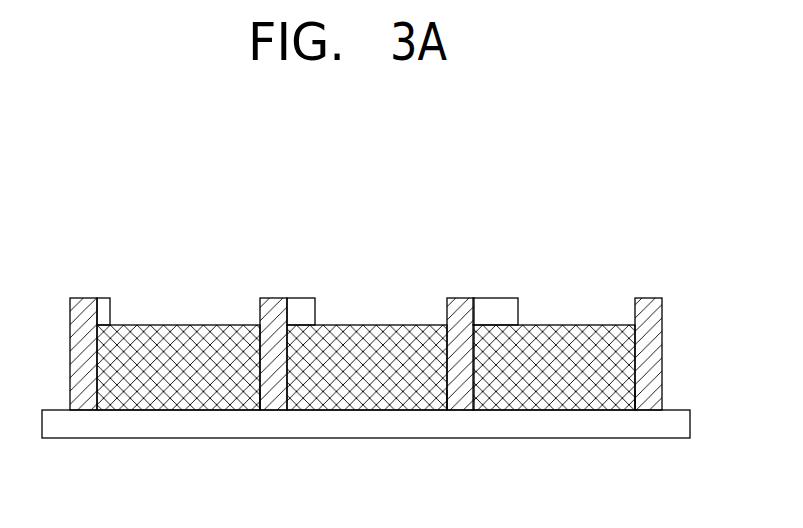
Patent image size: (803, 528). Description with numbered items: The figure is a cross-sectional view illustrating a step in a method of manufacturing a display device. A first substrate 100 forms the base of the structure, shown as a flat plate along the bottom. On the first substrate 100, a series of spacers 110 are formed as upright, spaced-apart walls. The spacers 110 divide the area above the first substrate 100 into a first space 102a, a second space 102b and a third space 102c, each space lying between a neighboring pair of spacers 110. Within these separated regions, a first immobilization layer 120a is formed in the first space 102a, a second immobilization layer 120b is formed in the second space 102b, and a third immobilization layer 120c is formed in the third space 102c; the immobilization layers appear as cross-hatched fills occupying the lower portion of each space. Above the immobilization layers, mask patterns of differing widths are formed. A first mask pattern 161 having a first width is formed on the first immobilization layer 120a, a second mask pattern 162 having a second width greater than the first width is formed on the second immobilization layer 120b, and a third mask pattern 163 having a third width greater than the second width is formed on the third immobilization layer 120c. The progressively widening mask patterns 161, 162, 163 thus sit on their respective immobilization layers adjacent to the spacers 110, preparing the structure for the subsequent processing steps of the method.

The first substrate 100 is at (677, 425).
The spacers 110 is at (650, 348).
The first immobilization layer 120a is at (152, 390).
The second immobilization layer 120b is at (337, 390).
The third immobilization layer 120c is at (525, 392).
The first space 102a is at (258, 392).
The second space 102b is at (445, 392).
The third space 102c is at (633, 392).
The first mask pattern 161 is at (103, 307).
The second mask pattern 162 is at (300, 307).
The third mask pattern 163 is at (493, 307).